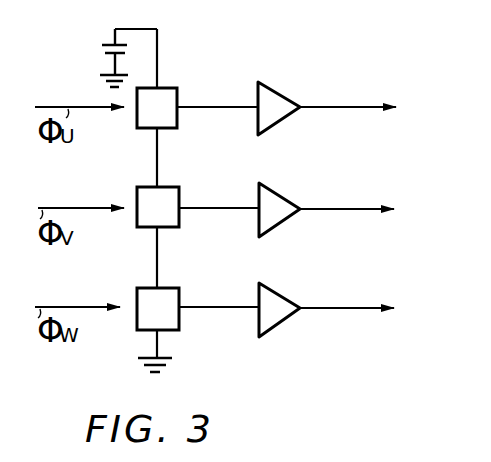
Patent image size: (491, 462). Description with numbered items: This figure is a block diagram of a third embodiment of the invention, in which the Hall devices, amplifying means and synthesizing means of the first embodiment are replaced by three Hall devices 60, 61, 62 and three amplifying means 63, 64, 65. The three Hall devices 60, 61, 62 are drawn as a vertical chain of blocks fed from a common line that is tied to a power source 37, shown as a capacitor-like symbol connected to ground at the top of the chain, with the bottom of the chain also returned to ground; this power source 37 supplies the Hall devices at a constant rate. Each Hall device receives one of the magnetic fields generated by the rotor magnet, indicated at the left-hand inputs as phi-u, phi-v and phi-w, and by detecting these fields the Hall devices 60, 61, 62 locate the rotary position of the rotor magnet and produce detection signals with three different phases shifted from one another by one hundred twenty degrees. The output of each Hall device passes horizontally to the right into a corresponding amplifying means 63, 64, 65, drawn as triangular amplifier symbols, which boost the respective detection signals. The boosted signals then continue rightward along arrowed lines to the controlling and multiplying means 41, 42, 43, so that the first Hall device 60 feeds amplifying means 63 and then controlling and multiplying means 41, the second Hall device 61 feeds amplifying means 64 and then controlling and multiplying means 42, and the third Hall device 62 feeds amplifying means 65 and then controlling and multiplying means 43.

The power source 37 is at (105, 48).
The Hall device 60 is at (177, 98).
The Hall device 61 is at (179, 192).
The Hall device 62 is at (179, 297).
The amplifying means 63 is at (288, 99).
The amplifying means 64 is at (287, 200).
The amplifying means 65 is at (287, 300).
The controlling and multiplying means 41 is at (369, 108).
The controlling and multiplying means 42 is at (369, 209).
The controlling and multiplying means 43 is at (369, 311).